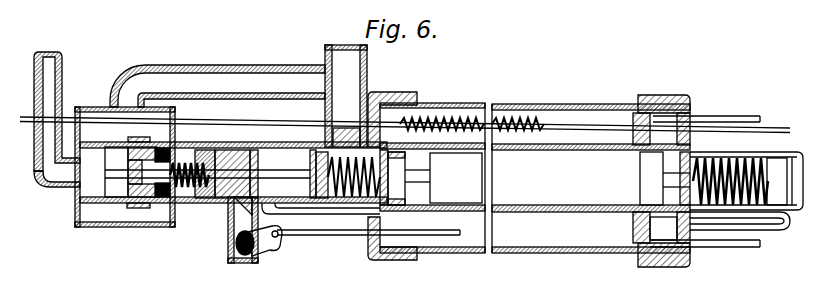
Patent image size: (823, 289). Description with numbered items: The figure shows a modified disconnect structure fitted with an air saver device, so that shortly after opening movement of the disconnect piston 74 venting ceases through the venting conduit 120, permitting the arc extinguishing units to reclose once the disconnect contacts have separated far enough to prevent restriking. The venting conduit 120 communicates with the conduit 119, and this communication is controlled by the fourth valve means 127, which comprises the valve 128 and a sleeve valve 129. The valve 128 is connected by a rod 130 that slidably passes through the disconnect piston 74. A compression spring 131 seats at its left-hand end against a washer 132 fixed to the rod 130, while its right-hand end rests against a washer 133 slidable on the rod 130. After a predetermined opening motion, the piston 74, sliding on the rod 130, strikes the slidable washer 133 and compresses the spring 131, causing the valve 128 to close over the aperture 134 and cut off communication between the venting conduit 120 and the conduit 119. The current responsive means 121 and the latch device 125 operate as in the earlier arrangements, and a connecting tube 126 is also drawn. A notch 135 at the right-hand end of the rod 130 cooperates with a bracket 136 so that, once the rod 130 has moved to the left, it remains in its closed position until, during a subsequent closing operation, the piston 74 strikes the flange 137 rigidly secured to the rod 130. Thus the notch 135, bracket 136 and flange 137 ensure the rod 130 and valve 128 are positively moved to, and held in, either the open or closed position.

The disconnect piston 74 is at (633, 230).
The conduit 119 is at (368, 56).
The venting conduit 120 is at (63, 74).
The current responsive means 121 is at (212, 220).
The latch device 125 is at (229, 215).
The connecting tube 126 is at (350, 238).
The fourth valve means 127 is at (207, 162).
The valve 128 is at (152, 141).
The sleeve valve 129 is at (303, 175).
The rod 130 is at (256, 125).
The compression spring 131 is at (458, 117).
The washer 132 is at (403, 93).
The washer 133 is at (525, 121).
The aperture 134 is at (110, 141).
The notch 135 is at (727, 141).
The bracket 136 is at (697, 140).
The flange 137 is at (664, 95).